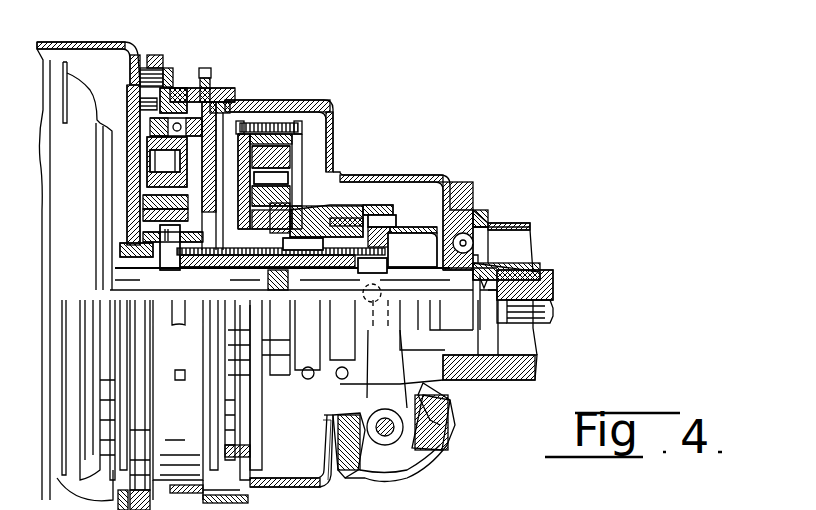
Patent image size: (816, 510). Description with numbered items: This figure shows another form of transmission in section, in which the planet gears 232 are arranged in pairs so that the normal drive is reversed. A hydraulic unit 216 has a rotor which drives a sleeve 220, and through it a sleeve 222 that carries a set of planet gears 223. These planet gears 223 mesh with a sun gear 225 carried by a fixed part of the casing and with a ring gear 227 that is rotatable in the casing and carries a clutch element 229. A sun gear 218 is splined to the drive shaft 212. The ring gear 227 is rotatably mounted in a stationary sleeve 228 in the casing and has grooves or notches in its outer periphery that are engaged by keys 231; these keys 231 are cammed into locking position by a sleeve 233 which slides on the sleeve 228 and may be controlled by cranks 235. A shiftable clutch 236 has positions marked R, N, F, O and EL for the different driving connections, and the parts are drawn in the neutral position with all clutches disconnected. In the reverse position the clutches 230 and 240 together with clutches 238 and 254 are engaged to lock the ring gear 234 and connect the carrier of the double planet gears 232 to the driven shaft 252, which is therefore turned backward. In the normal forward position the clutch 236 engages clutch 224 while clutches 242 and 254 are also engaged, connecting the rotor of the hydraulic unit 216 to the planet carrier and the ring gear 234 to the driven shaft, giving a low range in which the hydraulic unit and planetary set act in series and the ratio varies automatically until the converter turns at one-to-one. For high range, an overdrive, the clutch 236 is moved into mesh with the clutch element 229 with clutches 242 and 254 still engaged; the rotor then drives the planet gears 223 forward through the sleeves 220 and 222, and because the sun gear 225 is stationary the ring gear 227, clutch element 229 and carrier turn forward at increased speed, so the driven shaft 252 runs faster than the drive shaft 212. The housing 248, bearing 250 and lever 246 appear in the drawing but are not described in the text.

The shaft 212 is at (125, 270).
The hydraulic unit 216 is at (84, 77).
The sun gear 218 is at (300, 225).
The sleeve 220 is at (120, 255).
The sleeve 222 is at (140, 242).
The planet gears 223 is at (147, 155).
The clutch 224 is at (140, 220).
The sun gear 225 is at (147, 202).
The ring gear 227 is at (150, 140).
The stationary sleeve 228 is at (224, 122).
The clutch element 229 is at (268, 142).
The clutch 230 is at (268, 168).
The keys 231 is at (163, 86).
The planet gears 232 is at (268, 212).
The sleeve 233 is at (209, 128).
The ring gear 234 is at (254, 125).
The cranks 235 is at (206, 78).
The clutch 236 is at (142, 228).
The clutch 238 is at (384, 228).
The clutch 240 is at (212, 333).
The clutch 242 is at (338, 218).
The lever 246 is at (405, 412).
The housing 248 is at (382, 180).
The bearing 250 is at (430, 231).
The driven shaft 252 is at (545, 314).
The clutch 254 is at (365, 220).